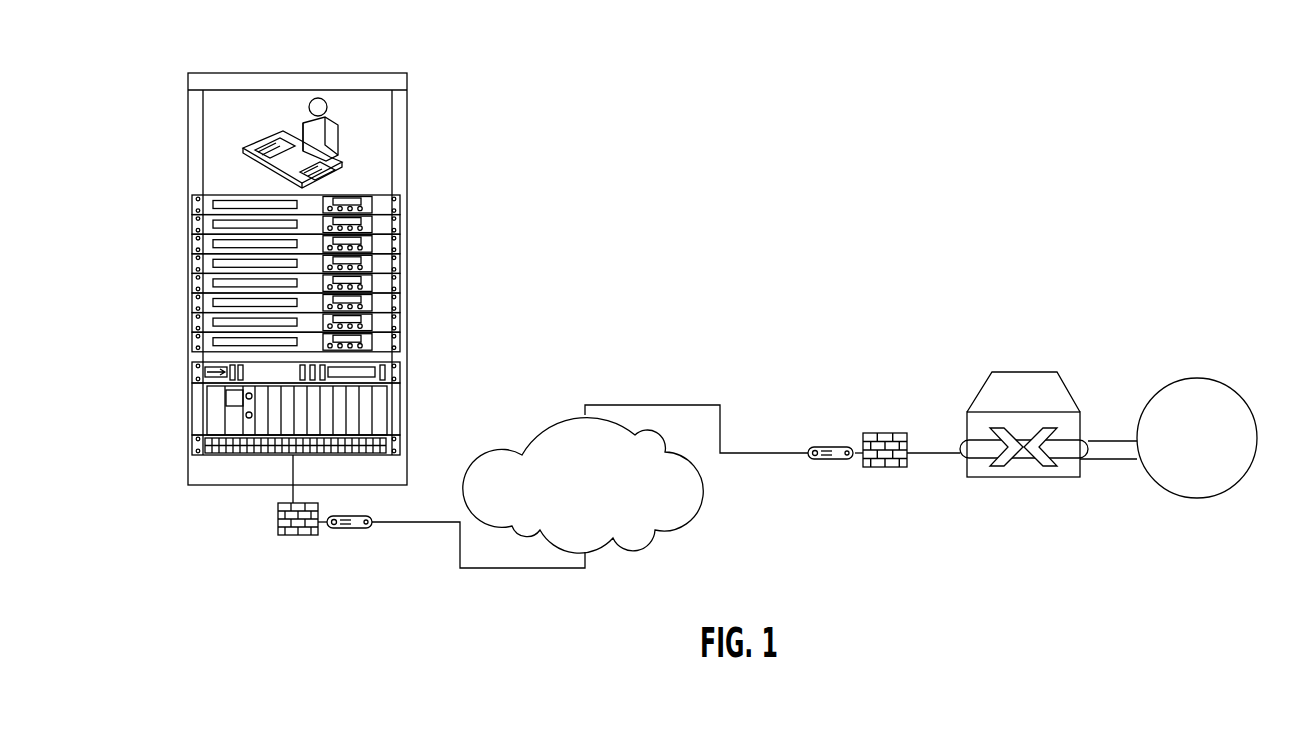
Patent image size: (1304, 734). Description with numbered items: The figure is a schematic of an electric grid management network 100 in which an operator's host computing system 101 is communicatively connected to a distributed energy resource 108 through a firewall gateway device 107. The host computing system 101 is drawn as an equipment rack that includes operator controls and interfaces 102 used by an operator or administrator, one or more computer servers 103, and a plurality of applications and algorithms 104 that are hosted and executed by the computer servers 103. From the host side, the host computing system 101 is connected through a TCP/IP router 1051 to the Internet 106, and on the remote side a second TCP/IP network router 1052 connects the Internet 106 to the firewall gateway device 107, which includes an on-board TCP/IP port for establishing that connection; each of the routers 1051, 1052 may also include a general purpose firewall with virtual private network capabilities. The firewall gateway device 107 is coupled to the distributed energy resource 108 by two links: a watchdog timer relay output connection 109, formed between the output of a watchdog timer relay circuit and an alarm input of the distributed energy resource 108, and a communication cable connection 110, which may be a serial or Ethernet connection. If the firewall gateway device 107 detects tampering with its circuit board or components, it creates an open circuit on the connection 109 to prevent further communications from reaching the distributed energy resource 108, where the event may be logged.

The electric grid management network 100 is at (774, 167).
The host computing system 101 is at (388, 73).
The operator workstation 102 is at (368, 119).
The computer servers 103 is at (167, 195).
The applications and algorithms 104 is at (167, 362).
The TCP/IP router 1051 is at (343, 528).
The TCP/IP network router 1052 is at (832, 460).
The Internet 106 is at (635, 540).
The firewall gateway device 107 is at (1030, 372).
The distributed energy resource (DER) 108 is at (1205, 380).
The watchdog timer relay output connection 109 is at (1100, 440).
The communication cable connection 110 is at (1110, 461).